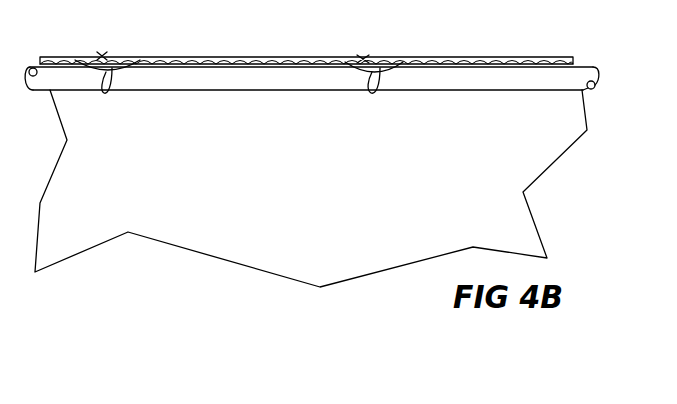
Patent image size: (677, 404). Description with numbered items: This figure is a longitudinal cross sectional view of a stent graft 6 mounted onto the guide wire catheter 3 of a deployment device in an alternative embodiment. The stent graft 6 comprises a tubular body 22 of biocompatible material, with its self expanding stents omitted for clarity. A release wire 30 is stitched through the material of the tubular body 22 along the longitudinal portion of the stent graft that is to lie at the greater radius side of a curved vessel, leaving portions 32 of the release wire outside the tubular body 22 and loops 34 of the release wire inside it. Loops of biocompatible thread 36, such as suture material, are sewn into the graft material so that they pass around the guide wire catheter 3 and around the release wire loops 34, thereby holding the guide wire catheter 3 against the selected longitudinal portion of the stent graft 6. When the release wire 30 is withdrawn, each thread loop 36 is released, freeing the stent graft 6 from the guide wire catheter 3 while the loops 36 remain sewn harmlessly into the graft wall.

The guide wire catheter 3 is at (568, 84).
The stent graft 6 is at (562, 221).
The tubular body 22 is at (527, 149).
The release wire 30 is at (520, 43).
The portions of the release wire 32 is at (472, 55).
The loops of the release wire 34 is at (370, 62).
The loops of biocompatible thread 36 is at (363, 61).